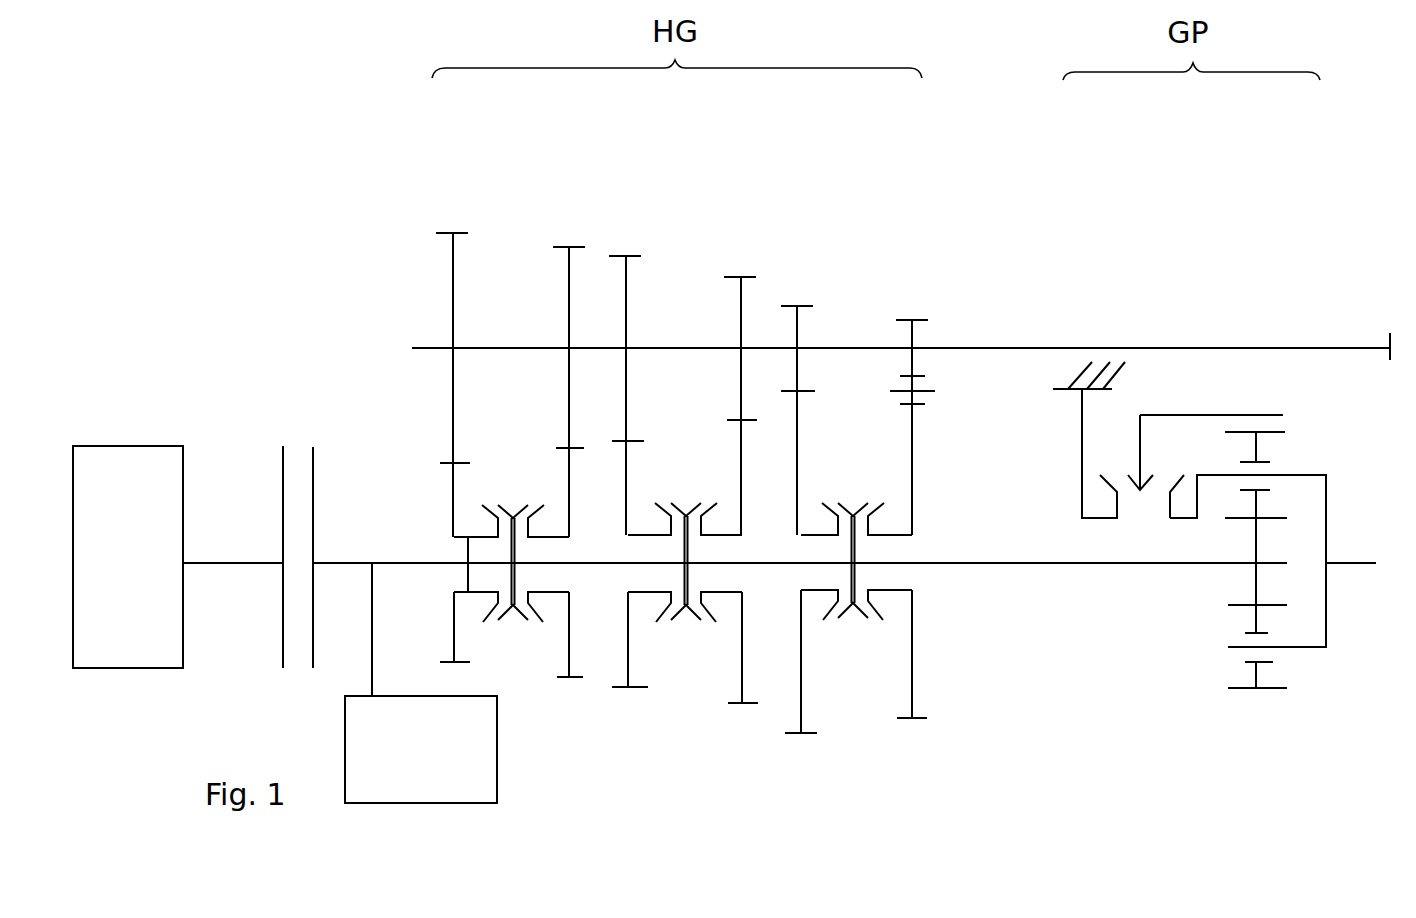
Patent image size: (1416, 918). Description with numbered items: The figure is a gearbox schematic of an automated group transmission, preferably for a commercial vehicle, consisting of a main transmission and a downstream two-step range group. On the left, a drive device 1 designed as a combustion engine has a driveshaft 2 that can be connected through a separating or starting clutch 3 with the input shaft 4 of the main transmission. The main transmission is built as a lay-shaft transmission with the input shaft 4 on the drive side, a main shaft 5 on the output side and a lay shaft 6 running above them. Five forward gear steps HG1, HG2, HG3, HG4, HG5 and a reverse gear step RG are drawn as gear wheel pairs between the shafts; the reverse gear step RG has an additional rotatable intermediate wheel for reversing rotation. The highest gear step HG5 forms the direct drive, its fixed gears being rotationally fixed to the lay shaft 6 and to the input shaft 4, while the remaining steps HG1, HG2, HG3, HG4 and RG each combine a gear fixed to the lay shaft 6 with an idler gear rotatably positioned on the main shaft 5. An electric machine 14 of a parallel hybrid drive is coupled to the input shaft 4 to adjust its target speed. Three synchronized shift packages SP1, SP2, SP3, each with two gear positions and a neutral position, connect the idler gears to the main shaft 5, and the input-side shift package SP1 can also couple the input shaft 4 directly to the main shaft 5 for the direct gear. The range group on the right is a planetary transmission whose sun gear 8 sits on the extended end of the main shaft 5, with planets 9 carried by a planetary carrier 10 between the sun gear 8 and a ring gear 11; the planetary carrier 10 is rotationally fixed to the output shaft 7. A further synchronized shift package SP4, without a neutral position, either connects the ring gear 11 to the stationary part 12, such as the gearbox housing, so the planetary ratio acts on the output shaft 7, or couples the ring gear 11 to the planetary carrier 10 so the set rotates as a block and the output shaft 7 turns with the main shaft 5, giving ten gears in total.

The drive device 1 is at (146, 446).
The driveshaft 2 is at (255, 563).
The separating clutch 3 is at (312, 446).
The input shaft 4 is at (388, 563).
The main shaft 5 is at (1022, 563).
The lay shaft 6 is at (1019, 347).
The output shaft 7 is at (1357, 563).
The sun gear 8 is at (1237, 608).
The planets 9 is at (1278, 693).
The planetary carrier 10 is at (1300, 648).
The ring gear 11 is at (1248, 415).
The stationary part 12 is at (1095, 378).
The electric machine 14 is at (432, 803).
The first main transmission gear step HG1 is at (802, 402).
The second main transmission gear step HG2 is at (738, 387).
The third main transmission gear step HG3 is at (638, 374).
The fourth main transmission gear step HG4 is at (563, 373).
The fifth main transmission gear step HG5 is at (452, 366).
The reverse gear step RG is at (911, 407).
The first synchronized shift package SP1 is at (511, 591).
The second synchronized shift package SP2 is at (685, 603).
The third synchronized shift package SP3 is at (856, 618).
The fourth synchronized shift package SP4 is at (1204, 518).